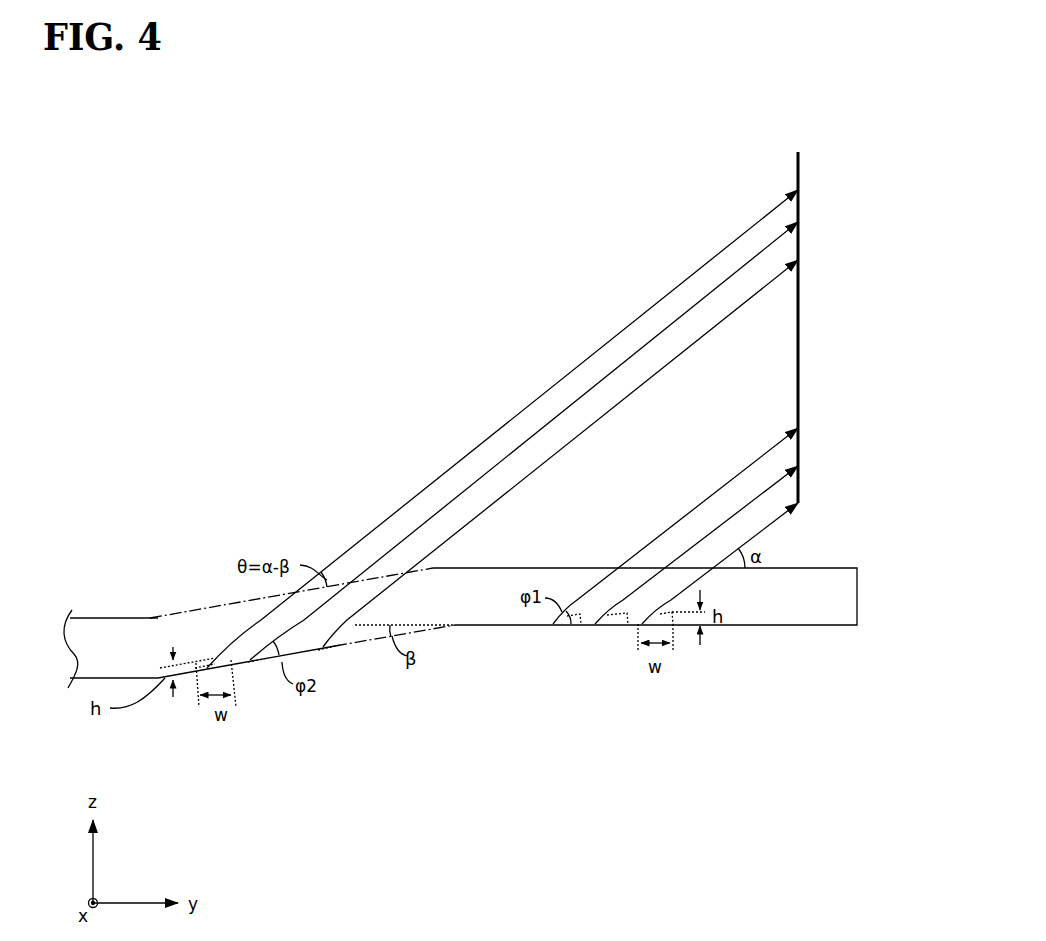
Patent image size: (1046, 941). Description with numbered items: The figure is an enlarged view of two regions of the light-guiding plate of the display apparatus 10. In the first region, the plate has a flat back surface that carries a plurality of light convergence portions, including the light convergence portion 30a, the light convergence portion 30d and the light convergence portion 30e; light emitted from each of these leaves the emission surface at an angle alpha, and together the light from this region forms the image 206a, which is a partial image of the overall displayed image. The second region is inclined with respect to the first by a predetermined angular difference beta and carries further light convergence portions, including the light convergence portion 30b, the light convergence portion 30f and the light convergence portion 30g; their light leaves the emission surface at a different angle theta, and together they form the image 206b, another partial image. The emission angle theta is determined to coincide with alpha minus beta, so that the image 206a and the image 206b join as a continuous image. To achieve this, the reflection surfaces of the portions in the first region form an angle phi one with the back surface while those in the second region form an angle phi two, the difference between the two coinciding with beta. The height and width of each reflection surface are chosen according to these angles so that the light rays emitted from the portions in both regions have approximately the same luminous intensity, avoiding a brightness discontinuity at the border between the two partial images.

The display apparatus 10 is at (665, 70).
The image 206a is at (798, 383).
The image 206b is at (796, 165).
The light convergence portion 30a is at (668, 636).
The light convergence portion 30b is at (204, 657).
The light convergence portion 30d is at (612, 638).
The light convergence portion 30e is at (556, 636).
The light convergence portion 30f is at (263, 672).
The light convergence portion 30g is at (329, 660).